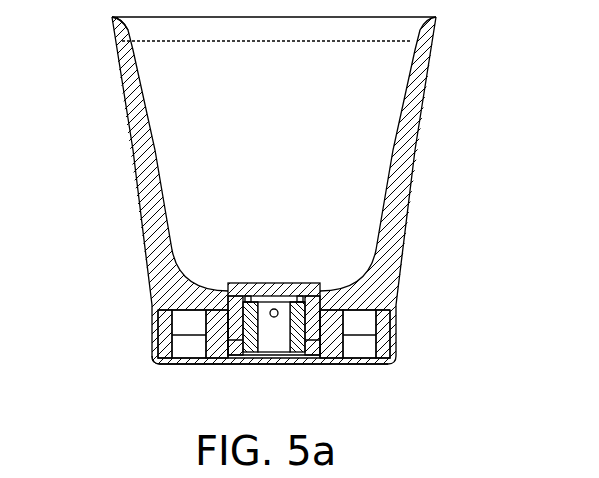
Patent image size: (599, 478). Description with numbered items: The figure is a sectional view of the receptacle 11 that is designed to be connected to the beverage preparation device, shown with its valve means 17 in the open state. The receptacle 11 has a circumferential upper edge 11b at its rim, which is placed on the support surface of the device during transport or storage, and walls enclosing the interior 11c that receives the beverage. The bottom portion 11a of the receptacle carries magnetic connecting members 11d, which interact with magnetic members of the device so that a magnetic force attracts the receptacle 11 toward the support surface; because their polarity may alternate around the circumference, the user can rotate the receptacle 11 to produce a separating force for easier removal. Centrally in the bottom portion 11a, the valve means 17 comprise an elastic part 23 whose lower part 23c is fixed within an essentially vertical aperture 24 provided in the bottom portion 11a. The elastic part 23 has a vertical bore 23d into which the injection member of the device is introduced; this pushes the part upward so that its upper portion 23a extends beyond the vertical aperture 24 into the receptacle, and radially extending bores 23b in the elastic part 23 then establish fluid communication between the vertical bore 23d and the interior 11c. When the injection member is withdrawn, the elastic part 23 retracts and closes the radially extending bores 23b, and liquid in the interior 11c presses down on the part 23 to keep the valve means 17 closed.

The receptacle 11 is at (444, 27).
The bottom portion 11a is at (168, 366).
The circumferential upper edge 11b is at (112, 26).
The interior 11c is at (296, 139).
The magnetic connecting members 11d is at (372, 330).
The valve means 17 is at (340, 320).
The elastic part 23 is at (330, 288).
The upper portion 23a is at (235, 318).
The radially extending bores 23b is at (243, 335).
The lower part 23c is at (222, 340).
The vertical bore 23d is at (272, 352).
The vertical aperture 24 is at (318, 357).